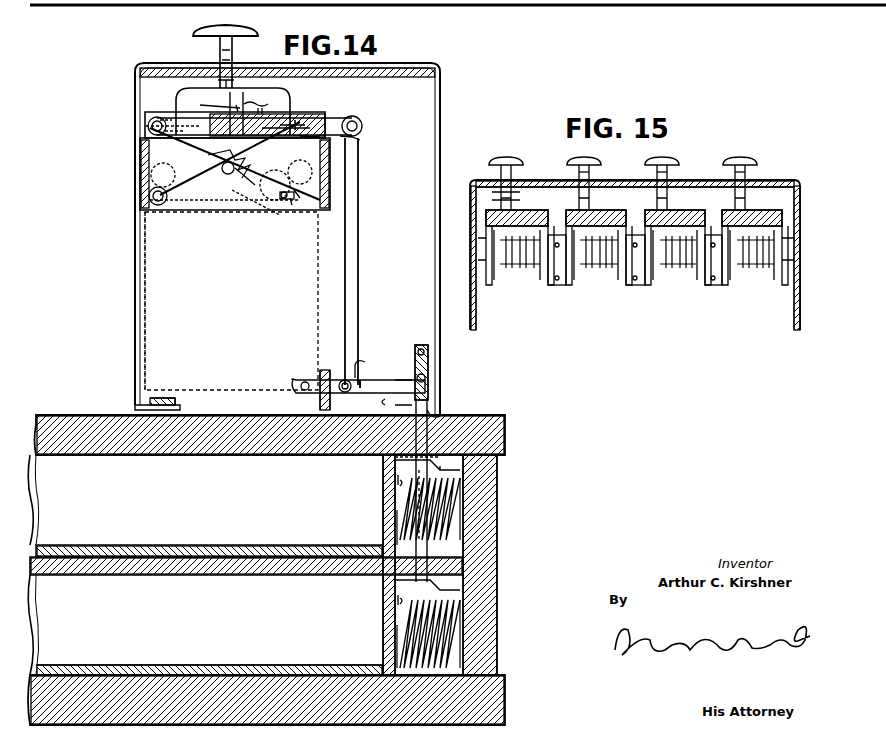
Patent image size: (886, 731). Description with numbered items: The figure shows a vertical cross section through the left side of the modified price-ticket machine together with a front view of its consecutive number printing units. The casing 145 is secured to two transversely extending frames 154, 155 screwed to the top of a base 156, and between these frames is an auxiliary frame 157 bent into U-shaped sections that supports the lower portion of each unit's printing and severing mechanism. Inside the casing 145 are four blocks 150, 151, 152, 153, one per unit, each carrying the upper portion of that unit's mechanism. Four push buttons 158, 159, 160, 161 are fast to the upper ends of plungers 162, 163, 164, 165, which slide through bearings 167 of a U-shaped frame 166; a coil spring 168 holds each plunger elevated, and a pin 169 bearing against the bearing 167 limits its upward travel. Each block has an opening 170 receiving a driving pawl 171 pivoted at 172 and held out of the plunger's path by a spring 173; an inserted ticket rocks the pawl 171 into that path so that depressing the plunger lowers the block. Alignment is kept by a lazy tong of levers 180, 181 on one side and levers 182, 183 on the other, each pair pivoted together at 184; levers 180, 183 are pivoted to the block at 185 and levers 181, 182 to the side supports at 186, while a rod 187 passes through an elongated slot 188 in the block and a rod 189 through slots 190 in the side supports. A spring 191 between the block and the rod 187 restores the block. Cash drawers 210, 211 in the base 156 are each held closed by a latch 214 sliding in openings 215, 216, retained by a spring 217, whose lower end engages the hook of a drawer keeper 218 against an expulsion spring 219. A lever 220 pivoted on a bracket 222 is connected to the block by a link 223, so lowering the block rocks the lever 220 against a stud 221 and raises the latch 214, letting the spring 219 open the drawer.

In FIG. 14, the casing 145 is at (440, 95).
In FIG. 15, the casing 145 is at (800, 306).
In FIG. 15, the block 150 is at (520, 212).
In FIG. 14, the block 151 is at (358, 140).
In FIG. 15, the block 151 is at (600, 212).
In FIG. 15, the block 152 is at (680, 212).
In FIG. 15, the block 153 is at (758, 212).
In FIG. 14, the transversely extending frame 154 is at (136, 398).
In FIG. 14, the transversely extending frame 155 is at (320, 375).
In FIG. 14, the base 156 is at (505, 438).
In FIG. 14, the auxiliary frame 157 is at (262, 205).
In FIG. 15, the auxiliary frame 157 is at (556, 285).
In FIG. 15, the push button 158 is at (514, 157).
In FIG. 14, the push button 159 is at (215, 30).
In FIG. 15, the push button 159 is at (592, 157).
In FIG. 15, the push button 160 is at (670, 157).
In FIG. 15, the push button 161 is at (745, 157).
In FIG. 15, the plunger 162 is at (492, 168).
In FIG. 14, the plunger 163 is at (220, 52).
In FIG. 15, the plunger 163 is at (590, 172).
In FIG. 15, the plunger 164 is at (668, 172).
In FIG. 15, the plunger 165 is at (750, 166).
In FIG. 14, the U-shaped frame 166 is at (318, 74).
In FIG. 15, the U-shaped frame 166 is at (470, 206).
In FIG. 14, the bearing 167 is at (236, 82).
In FIG. 14, the coil spring 168 is at (230, 55).
In FIG. 14, the pin 169 is at (210, 104).
In FIG. 14, the opening 170 is at (232, 104).
In FIG. 14, the driving pawl 171 is at (262, 104).
In FIG. 15, the driving pawl 171 is at (512, 195).
In FIG. 14, the pivot 172 is at (248, 158).
In FIG. 14, the spring 173 is at (265, 105).
In FIG. 14, the lever 180 is at (175, 140).
In FIG. 14, the lever 181 is at (160, 205).
In FIG. 14, the lever 182 is at (288, 141).
In FIG. 14, the lever 183 is at (242, 220).
In FIG. 14, the pivot 184 is at (238, 170).
In FIG. 14, the pivot 185 is at (148, 127).
In FIG. 14, the pivot 186 is at (149, 196).
In FIG. 14, the rod 187 is at (290, 120).
In FIG. 14, the elongated slot 188 is at (345, 118).
In FIG. 14, the rod 189 is at (283, 200).
In FIG. 14, the elongated slot 190 is at (295, 206).
In FIG. 14, the spring 191 is at (176, 102).
In FIG. 14, the cash drawer 210 is at (62, 455).
In FIG. 14, the cash drawer 211 is at (96, 583).
In FIG. 14, the latch 214 is at (395, 462).
In FIG. 14, the opening 215 is at (432, 400).
In FIG. 14, the opening 216 is at (440, 420).
In FIG. 14, the spring 217 is at (430, 353).
In FIG. 14, the drawer keeper 218 is at (398, 483).
In FIG. 14, the expulsion spring 219 is at (400, 512).
In FIG. 14, the lever 220 is at (400, 375).
In FIG. 14, the stud 221 is at (428, 378).
In FIG. 14, the bracket 222 is at (400, 370).
In FIG. 14, the link 223 is at (358, 192).